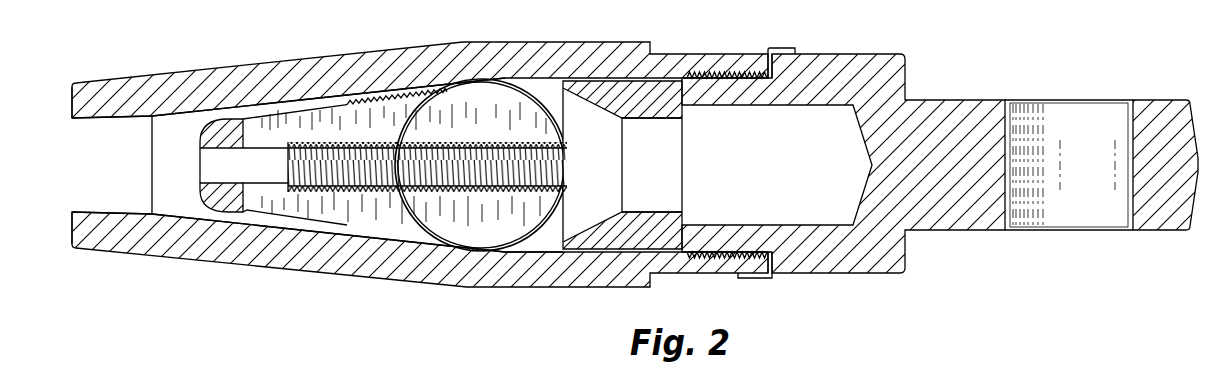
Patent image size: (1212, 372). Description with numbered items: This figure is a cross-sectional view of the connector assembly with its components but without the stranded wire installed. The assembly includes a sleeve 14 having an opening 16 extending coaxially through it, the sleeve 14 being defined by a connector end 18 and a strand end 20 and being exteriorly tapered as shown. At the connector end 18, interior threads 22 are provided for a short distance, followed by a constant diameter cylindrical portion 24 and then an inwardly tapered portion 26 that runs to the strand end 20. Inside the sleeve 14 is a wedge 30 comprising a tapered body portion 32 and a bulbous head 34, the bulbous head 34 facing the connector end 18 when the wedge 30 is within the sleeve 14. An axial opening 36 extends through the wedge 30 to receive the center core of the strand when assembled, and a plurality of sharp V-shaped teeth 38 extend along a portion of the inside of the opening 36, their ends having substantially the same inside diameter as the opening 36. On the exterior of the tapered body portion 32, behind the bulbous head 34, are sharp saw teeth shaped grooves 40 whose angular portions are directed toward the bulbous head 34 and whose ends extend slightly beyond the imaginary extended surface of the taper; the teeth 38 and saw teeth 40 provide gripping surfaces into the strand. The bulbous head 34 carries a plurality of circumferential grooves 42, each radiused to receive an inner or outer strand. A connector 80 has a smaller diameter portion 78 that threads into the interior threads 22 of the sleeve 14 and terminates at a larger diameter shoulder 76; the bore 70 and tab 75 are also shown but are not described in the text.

The sleeve 14 is at (470, 42).
The opening 16 is at (176, 125).
The connector end 18 is at (762, 52).
The strand end 20 is at (72, 118).
The interior threads 22 is at (683, 256).
The constant diameter cylindrical portion 24 is at (543, 247).
The inwardly tapered portion 26 is at (178, 214).
The wedge 30 is at (338, 225).
The tapered body portion 32 is at (285, 108).
The bulbous head 34 is at (553, 90).
The axial opening 36 is at (275, 177).
The sharp V-shaped teeth 38 is at (410, 190).
The saw teeth shaped grooves 40 is at (398, 101).
The circumferential grooves 42 is at (512, 92).
The insert bore 70 is at (653, 105).
The lock washer tab 75 is at (752, 279).
The larger diameter shoulder 76 is at (772, 262).
The smaller diameter portion 78 is at (730, 252).
The connector 80 is at (890, 273).